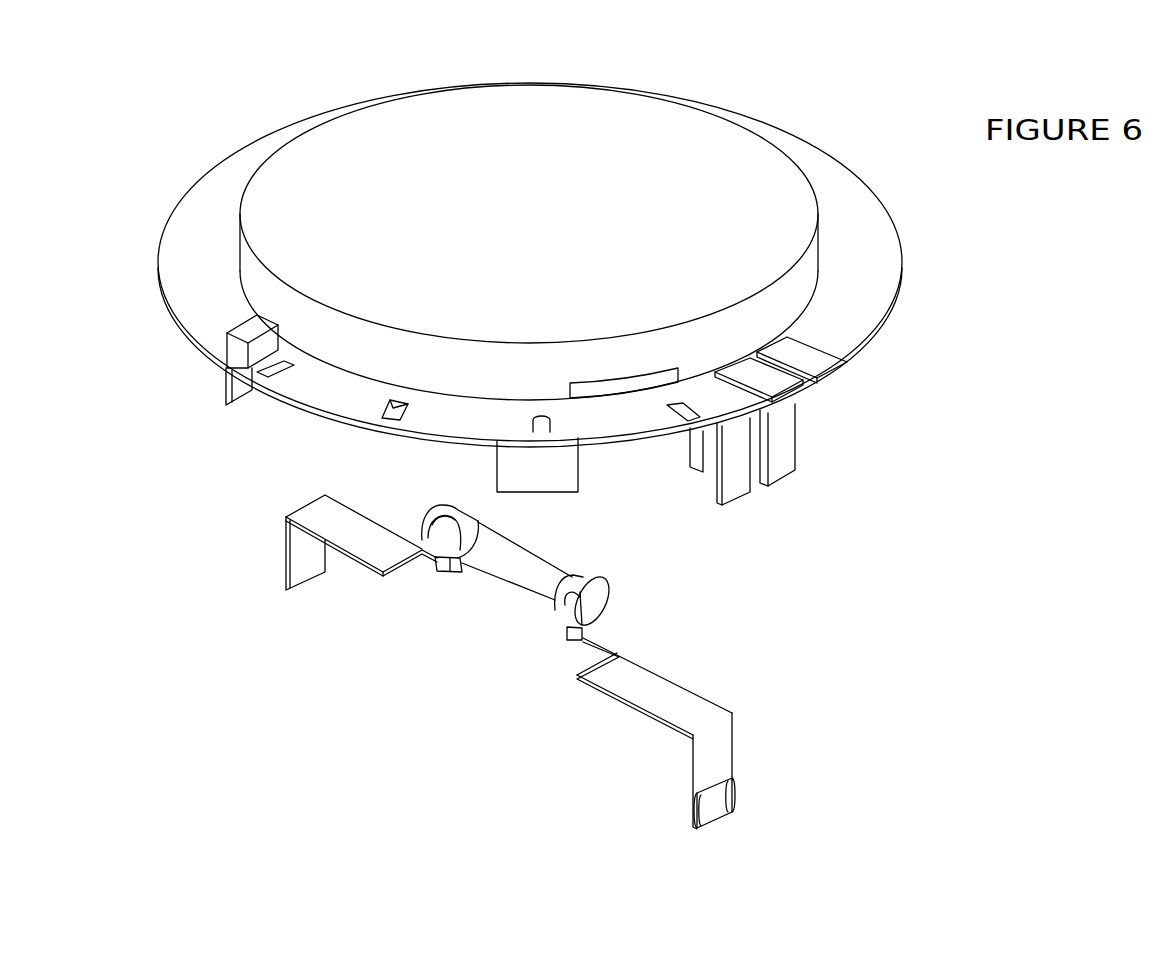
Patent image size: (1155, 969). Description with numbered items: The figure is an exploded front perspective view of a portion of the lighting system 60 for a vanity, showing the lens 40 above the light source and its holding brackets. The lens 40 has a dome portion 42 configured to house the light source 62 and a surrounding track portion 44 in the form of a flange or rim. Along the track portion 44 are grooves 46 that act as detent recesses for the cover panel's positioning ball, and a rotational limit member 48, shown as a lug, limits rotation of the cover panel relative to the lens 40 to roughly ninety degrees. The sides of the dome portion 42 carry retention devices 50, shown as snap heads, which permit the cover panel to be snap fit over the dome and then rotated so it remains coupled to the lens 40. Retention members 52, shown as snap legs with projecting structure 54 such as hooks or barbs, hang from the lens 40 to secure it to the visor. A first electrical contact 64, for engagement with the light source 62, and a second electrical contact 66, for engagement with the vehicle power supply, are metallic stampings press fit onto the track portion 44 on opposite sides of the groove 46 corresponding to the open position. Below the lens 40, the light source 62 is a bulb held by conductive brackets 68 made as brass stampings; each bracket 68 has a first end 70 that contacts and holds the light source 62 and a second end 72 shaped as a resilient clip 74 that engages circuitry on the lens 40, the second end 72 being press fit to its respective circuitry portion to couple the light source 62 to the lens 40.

The lens 40 is at (547, 221).
The dome portion 42 is at (620, 147).
The track portion 44 is at (183, 250).
The groove 46 is at (383, 404).
The rotational limit member 48 is at (268, 345).
The retention device 50 is at (627, 385).
The retention member 52 is at (508, 470).
The projecting structure 54 is at (243, 397).
The lighting system 60 is at (328, 709).
The light source 62 is at (552, 553).
The first electrical contact 64 is at (778, 382).
The second electrical contact 66 is at (815, 362).
The bracket 68 is at (345, 530).
The first end 70 is at (437, 546).
The second end 72 is at (306, 550).
The resilient clip 74 is at (715, 805).